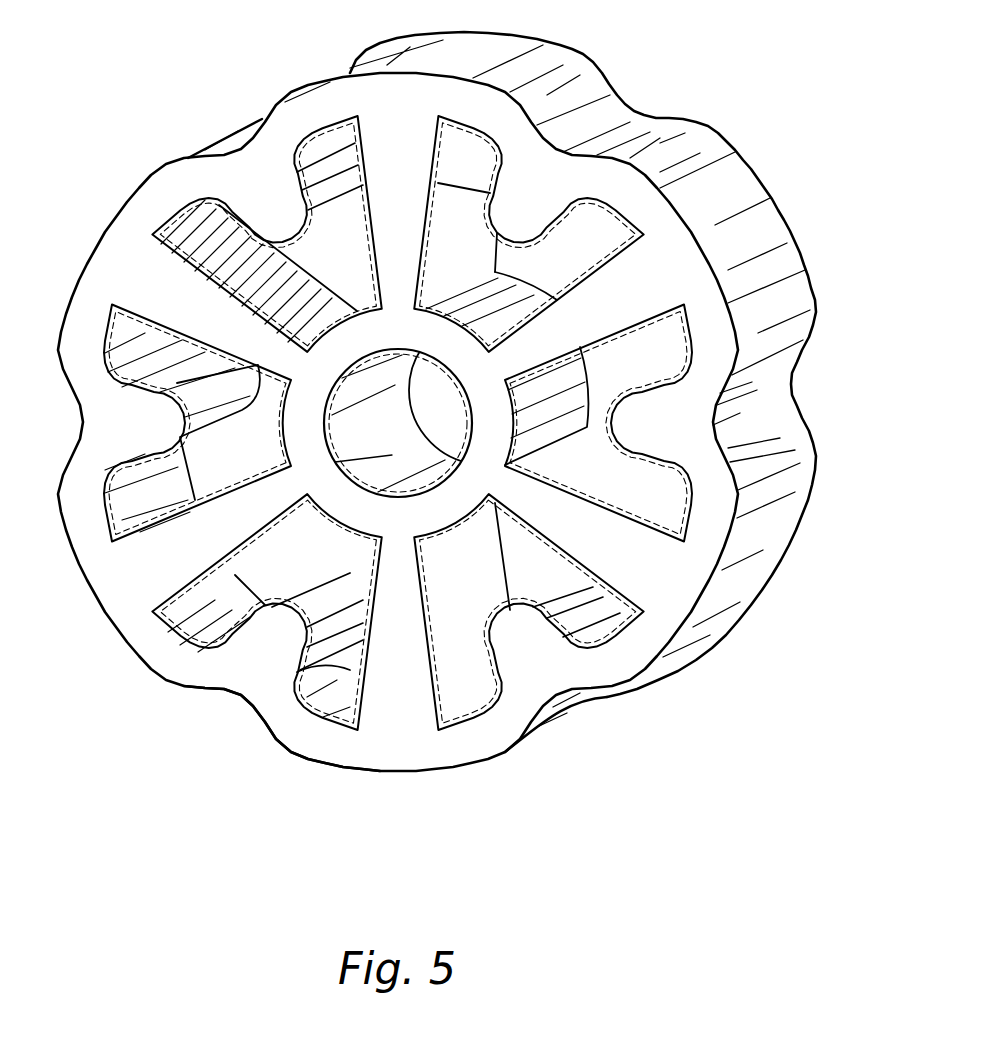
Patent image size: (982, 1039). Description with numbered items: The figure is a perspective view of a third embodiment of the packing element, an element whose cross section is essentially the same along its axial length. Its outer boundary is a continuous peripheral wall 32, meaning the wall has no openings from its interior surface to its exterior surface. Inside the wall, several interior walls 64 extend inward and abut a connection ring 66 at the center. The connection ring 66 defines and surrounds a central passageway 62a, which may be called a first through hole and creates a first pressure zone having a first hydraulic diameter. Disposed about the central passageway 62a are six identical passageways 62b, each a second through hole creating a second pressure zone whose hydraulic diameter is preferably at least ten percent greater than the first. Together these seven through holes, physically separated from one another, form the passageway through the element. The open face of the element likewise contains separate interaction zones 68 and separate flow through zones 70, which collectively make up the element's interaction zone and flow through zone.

The continuous peripheral wall 32 is at (310, 747).
The central passageway 62a is at (407, 439).
The identical passageways 62b is at (318, 288).
The interior walls 64 is at (395, 630).
The connection ring 66 is at (121, 252).
The interaction zones 68 is at (497, 232).
The flow through zones 70 is at (545, 272).